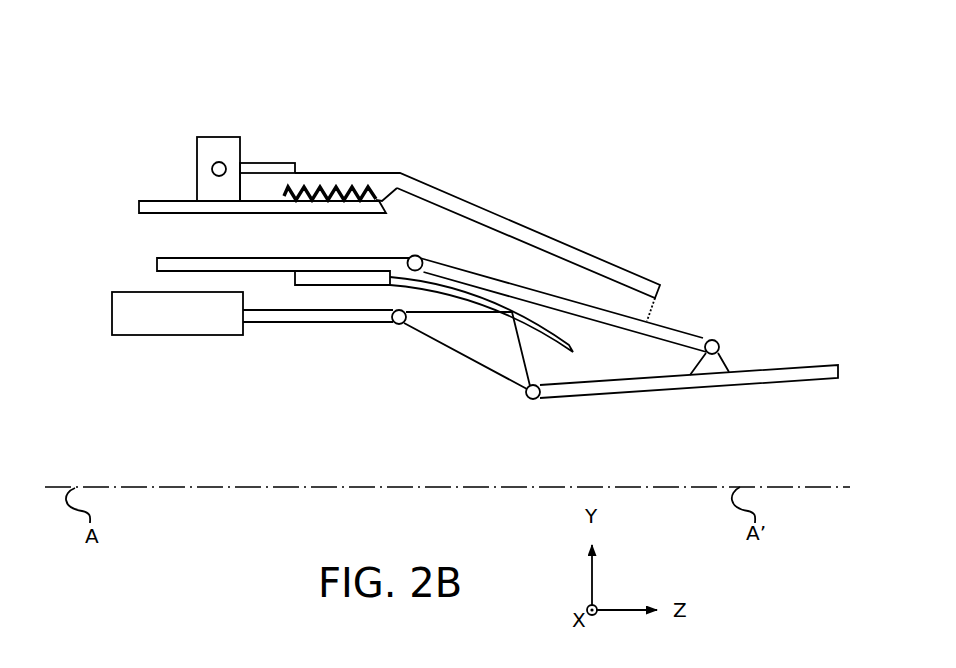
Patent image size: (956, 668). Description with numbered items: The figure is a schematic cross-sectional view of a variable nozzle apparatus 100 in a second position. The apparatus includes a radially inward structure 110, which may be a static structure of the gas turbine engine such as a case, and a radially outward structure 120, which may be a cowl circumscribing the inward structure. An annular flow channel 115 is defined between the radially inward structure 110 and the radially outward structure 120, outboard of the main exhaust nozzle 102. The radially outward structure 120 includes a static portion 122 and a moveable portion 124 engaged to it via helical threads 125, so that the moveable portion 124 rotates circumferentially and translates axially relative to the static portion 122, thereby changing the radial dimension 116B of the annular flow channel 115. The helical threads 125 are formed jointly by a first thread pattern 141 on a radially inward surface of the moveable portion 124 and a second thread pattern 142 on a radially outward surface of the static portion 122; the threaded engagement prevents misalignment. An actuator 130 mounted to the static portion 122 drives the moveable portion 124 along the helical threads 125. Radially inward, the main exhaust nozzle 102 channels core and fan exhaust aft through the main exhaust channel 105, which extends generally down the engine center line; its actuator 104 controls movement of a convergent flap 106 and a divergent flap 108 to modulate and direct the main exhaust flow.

The variable nozzle apparatus 100 is at (96, 68).
The main exhaust nozzle 102 is at (334, 384).
The actuator 104 is at (188, 317).
The main exhaust channel 105 is at (393, 466).
The convergent flap 106 is at (463, 358).
The divergent flap 108 is at (617, 393).
The radially inward structure 110 is at (173, 263).
The annular flow channel 115 is at (410, 253).
The radial dimension 116B is at (656, 305).
The radially outward structure 120 is at (118, 223).
The static portion 122 is at (336, 207).
The moveable portion 124 is at (421, 184).
The helical threads 125 is at (396, 206).
The actuator 130 is at (211, 165).
The first thread pattern 141 is at (288, 196).
The second thread pattern 142 is at (303, 201).